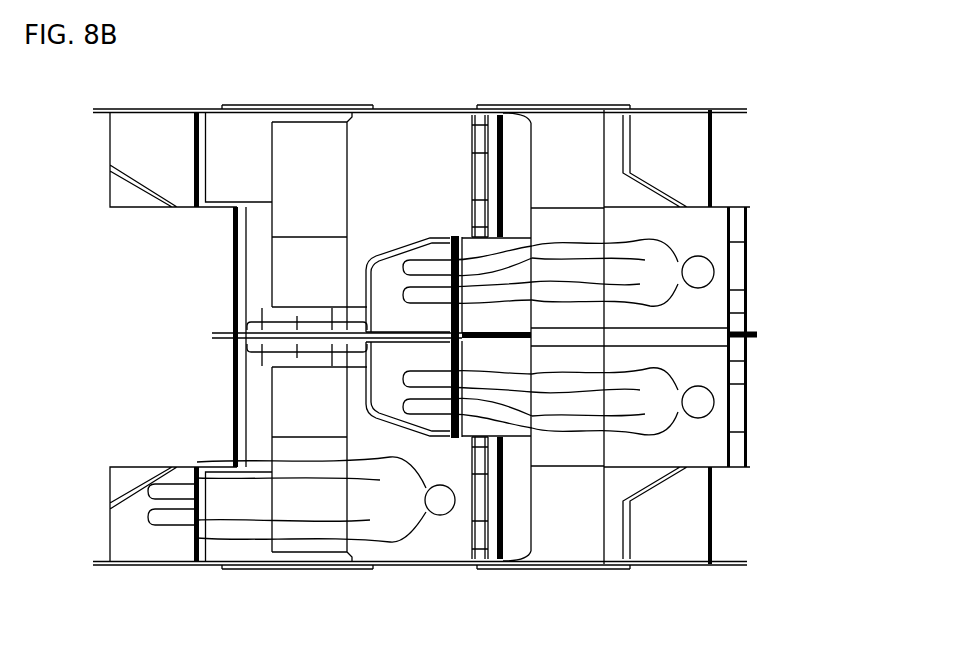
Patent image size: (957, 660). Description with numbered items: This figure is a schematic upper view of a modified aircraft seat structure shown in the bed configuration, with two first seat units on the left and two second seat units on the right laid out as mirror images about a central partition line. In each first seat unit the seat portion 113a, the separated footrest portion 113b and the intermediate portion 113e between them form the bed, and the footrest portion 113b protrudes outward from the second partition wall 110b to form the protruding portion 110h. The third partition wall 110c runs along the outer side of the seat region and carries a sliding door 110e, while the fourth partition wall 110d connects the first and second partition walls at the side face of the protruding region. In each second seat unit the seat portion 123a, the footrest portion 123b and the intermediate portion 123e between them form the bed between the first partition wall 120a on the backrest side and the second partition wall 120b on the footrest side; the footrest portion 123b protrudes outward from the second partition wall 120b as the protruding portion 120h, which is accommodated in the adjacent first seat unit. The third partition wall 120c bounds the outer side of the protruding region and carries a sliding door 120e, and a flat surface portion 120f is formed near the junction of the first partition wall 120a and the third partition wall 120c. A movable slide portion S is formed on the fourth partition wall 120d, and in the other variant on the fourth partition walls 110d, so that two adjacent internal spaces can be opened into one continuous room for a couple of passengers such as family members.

The third partition wall 110c is at (137, 107).
The third partition wall 120c is at (649, 108).
The sliding door 110e is at (265, 105).
The sliding door 120e is at (522, 104).
The protruding portion 110h is at (167, 147).
The footrest portion 113b is at (256, 177).
The seat portion 113a is at (440, 175).
The intermediate portion 113e is at (300, 239).
The second partition wall 110b is at (232, 262).
The fourth partition wall 110d is at (215, 340).
The movable slide portion S is at (307, 323).
The protruding portion 120h is at (421, 330).
The footrest portion 123b is at (506, 367).
The fourth partition wall 120d is at (498, 332).
The second partition wall 120b is at (505, 157).
The bed space of second vehicle 123e is at (560, 222).
The flat surface portion 120f is at (691, 154).
The first partition wall 120a is at (711, 155).
The seat portion 123a is at (718, 234).